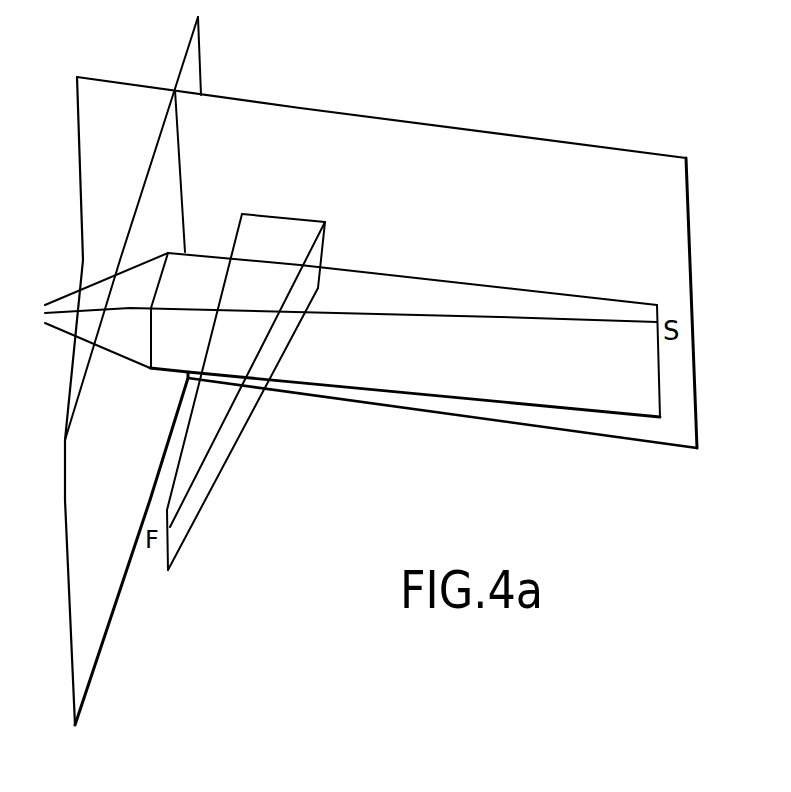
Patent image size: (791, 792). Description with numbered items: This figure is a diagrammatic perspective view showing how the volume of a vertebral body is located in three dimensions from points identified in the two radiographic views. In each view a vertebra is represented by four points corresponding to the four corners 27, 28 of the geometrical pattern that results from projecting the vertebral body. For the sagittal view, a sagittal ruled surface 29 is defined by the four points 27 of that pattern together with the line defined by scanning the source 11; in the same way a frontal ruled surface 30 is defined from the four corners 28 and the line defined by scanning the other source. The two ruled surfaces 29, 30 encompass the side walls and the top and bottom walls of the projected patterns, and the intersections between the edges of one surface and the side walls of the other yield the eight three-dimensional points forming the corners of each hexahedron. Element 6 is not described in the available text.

The scan plane 6 is at (133, 371).
The source 11 is at (407, 262).
The four corners of the geometrical pattern in the sagittal view 27 is at (336, 335).
The four corners of the geometrical pattern in the frontal view 28 is at (365, 179).
The sagittal ruled surface 29 is at (449, 430).
The frontal ruled surface 30 is at (246, 392).